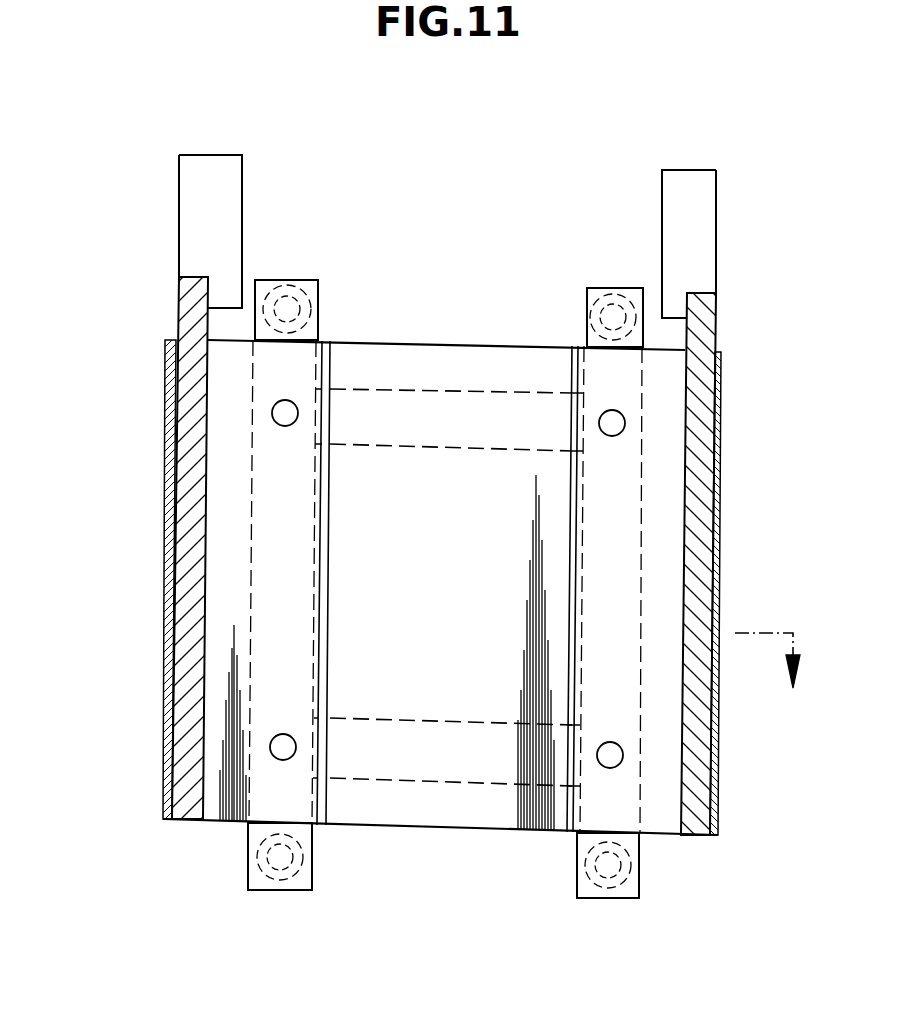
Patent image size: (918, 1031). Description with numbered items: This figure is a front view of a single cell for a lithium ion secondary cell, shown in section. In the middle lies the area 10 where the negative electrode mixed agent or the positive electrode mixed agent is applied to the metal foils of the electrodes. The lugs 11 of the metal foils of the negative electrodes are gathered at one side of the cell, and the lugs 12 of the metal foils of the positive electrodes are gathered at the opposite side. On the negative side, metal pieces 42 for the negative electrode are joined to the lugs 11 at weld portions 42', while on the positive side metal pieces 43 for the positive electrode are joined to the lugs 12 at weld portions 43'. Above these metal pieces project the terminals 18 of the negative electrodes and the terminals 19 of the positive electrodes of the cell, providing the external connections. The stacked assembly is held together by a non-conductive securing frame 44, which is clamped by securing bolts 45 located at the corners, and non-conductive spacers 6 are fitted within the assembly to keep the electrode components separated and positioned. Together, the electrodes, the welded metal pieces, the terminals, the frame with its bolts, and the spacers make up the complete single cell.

The area where the mixed agent is to be applied 10 is at (482, 697).
The lugs of the metal foils of the negative electrodes 11 is at (220, 634).
The lugs of the metal foils of the positive electrodes 12 is at (323, 540).
The terminals of the negative electrodes 18 is at (225, 186).
The terminals of the positive electrodes 19 is at (677, 210).
The metal pieces for the negative electrode 42 is at (141, 548).
The weld portions of the negative electrode metal pieces and lugs 42' is at (121, 584).
The metal pieces for the positive electrode 43 is at (737, 564).
The weld portions of the positive electrode metal pieces and lugs 43' is at (757, 605).
The non-conductive securing frame 44 is at (427, 405).
The securing bolts 45 is at (287, 306).
The non-conductive spacers 6 is at (278, 413).